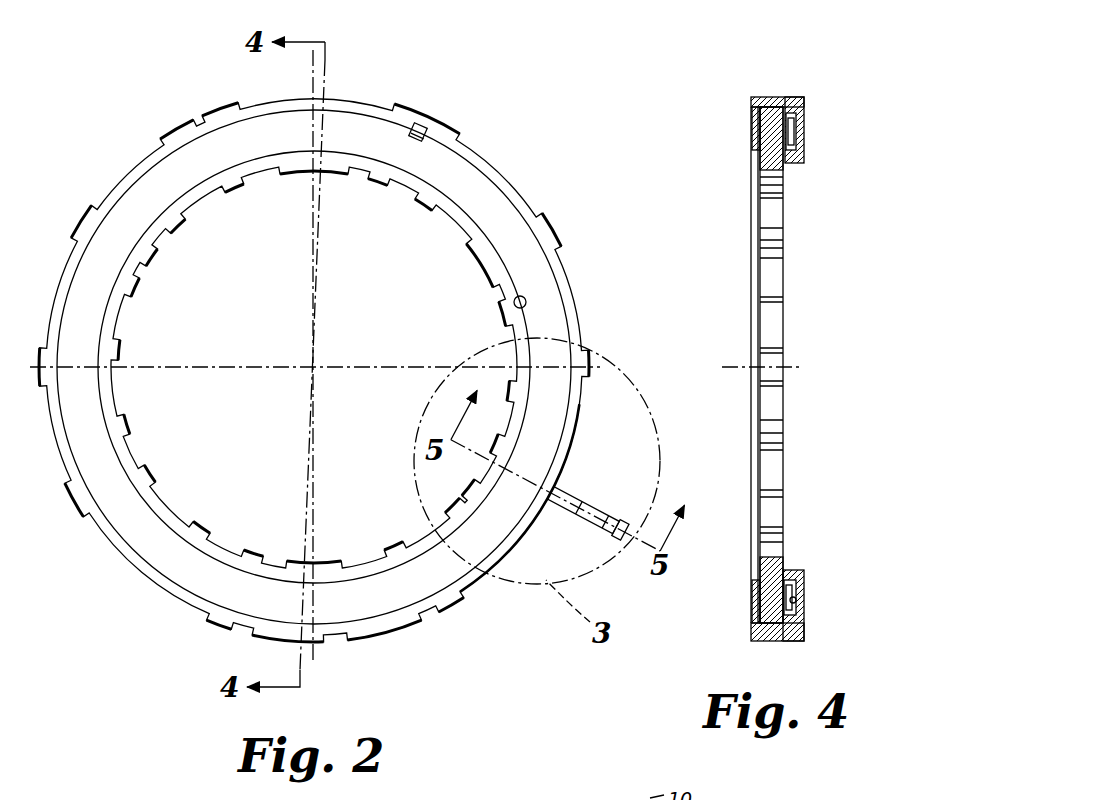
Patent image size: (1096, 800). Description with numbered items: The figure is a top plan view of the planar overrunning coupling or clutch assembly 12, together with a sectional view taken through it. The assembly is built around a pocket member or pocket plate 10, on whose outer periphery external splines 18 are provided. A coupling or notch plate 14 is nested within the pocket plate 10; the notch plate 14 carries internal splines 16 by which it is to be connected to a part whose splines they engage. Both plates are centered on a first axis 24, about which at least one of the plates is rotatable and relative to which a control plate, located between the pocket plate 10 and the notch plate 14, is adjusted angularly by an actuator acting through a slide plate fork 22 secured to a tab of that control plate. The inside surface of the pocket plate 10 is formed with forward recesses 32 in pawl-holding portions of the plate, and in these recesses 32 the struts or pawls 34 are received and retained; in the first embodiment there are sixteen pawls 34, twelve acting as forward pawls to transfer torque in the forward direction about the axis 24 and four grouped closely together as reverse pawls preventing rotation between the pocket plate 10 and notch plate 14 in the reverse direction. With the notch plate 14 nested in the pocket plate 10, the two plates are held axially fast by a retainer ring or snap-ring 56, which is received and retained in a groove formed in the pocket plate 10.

In FIG. 2, the pocket plate 10 is at (496, 155).
In FIG. 4, the pocket plate 10 is at (786, 93).
In FIG. 2, the overrunning coupling assembly 12 is at (345, 338).
In FIG. 4, the overrunning coupling assembly 12 is at (780, 320).
In FIG. 2, the notch plate 14 is at (360, 556).
In FIG. 4, the notch plate 14 is at (771, 103).
In FIG. 2, the internal splines 16 is at (181, 229).
In FIG. 2, the external splines 18 is at (222, 105).
In FIG. 2, the slide plate fork 22 is at (618, 512).
In FIG. 2, the first axis 24 is at (319, 362).
In FIG. 4, the first axis 24 is at (807, 366).
In FIG. 4, the forward recesses 32 is at (795, 118).
In FIG. 4, the pawls 34 is at (800, 605).
In FIG. 2, the snap-ring 56 is at (420, 145).
In FIG. 4, the snap-ring 56 is at (760, 130).